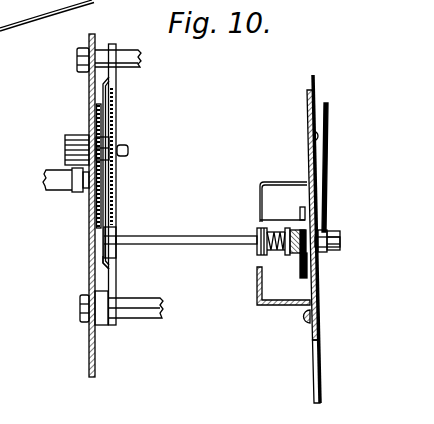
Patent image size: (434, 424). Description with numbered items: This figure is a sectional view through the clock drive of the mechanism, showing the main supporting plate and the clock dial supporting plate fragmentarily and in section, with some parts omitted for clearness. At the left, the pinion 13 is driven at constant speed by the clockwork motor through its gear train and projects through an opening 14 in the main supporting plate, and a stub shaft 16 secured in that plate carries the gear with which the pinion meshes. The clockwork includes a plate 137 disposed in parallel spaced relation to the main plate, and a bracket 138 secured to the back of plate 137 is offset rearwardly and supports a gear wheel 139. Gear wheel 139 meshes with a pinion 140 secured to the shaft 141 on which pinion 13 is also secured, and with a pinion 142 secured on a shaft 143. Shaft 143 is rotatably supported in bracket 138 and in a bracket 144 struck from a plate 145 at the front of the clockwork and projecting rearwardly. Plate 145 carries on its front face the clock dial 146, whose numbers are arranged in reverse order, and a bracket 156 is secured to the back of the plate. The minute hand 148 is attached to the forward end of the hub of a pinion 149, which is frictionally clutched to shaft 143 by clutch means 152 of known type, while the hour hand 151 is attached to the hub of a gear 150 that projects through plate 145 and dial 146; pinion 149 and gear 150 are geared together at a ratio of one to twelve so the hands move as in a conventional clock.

The pinion 13 is at (65, 137).
The opening 14 is at (88, 118).
The stub shaft 16 is at (60, 186).
The plate 137 is at (117, 92).
The bracket 138 is at (100, 211).
The gear wheel 139 is at (117, 212).
The pinion 140 is at (106, 140).
The shaft 141 is at (129, 154).
The pinion 142 is at (107, 262).
The shaft 143 is at (152, 236).
The bracket 144 is at (268, 184).
The plate 145 is at (308, 103).
The clock dial 146 is at (312, 78).
The minute hand 148 is at (328, 106).
The pinion 149 is at (318, 254).
The gear 150 is at (316, 268).
The hour hand 151 is at (311, 135).
The clutch means 152 is at (270, 229).
The bracket 156 is at (258, 300).